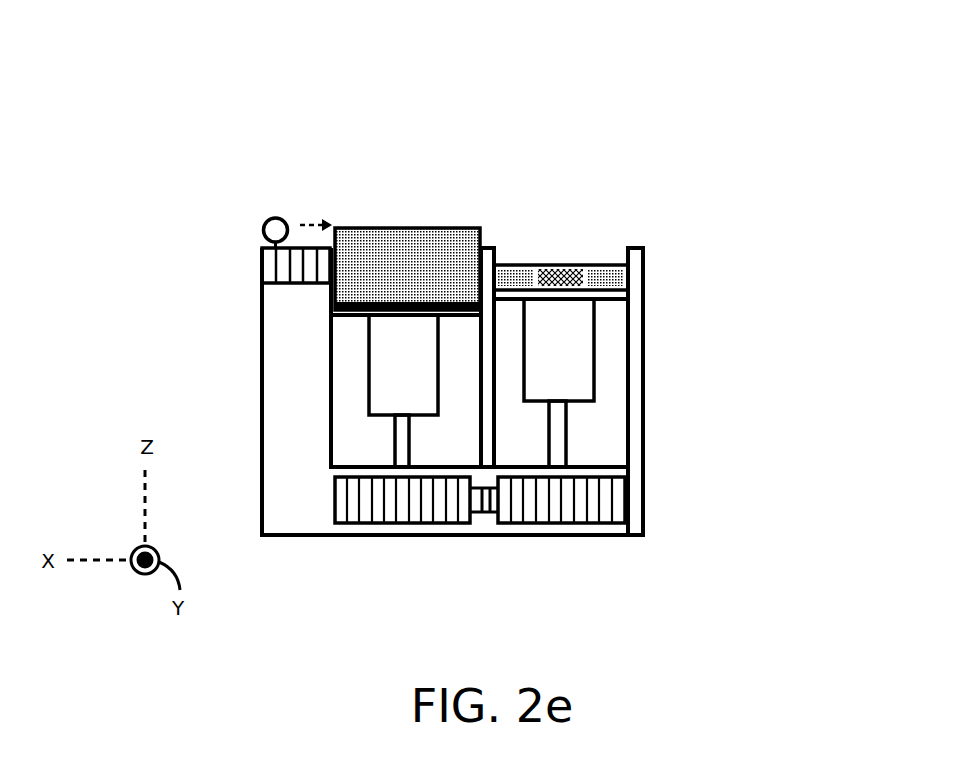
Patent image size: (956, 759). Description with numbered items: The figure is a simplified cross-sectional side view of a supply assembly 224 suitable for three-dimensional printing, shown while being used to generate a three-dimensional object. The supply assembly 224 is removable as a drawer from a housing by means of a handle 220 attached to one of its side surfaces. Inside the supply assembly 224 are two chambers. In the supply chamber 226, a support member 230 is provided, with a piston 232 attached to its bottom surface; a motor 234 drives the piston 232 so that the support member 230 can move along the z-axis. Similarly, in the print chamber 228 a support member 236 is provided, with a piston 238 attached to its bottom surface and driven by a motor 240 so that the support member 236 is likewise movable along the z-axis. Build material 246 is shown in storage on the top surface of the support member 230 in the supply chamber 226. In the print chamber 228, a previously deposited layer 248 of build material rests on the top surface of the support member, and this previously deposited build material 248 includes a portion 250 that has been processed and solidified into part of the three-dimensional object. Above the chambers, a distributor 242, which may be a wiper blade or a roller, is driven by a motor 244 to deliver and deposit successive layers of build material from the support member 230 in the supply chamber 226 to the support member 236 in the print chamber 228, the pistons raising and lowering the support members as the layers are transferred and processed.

The handle 220 is at (246, 340).
The supply assembly 224 is at (468, 128).
The supply chamber 226 is at (348, 212).
The print chamber 228 is at (520, 252).
The support member 230 is at (328, 317).
The piston 232 is at (367, 377).
The motor 234 is at (400, 522).
The support member 236 is at (630, 288).
The piston 238 is at (595, 357).
The motor 240 is at (558, 522).
The distributor 242 is at (275, 217).
The motor 244 is at (260, 270).
The build material 246 is at (373, 230).
The previously deposited layer 248 is at (605, 262).
The portion 250 is at (558, 268).